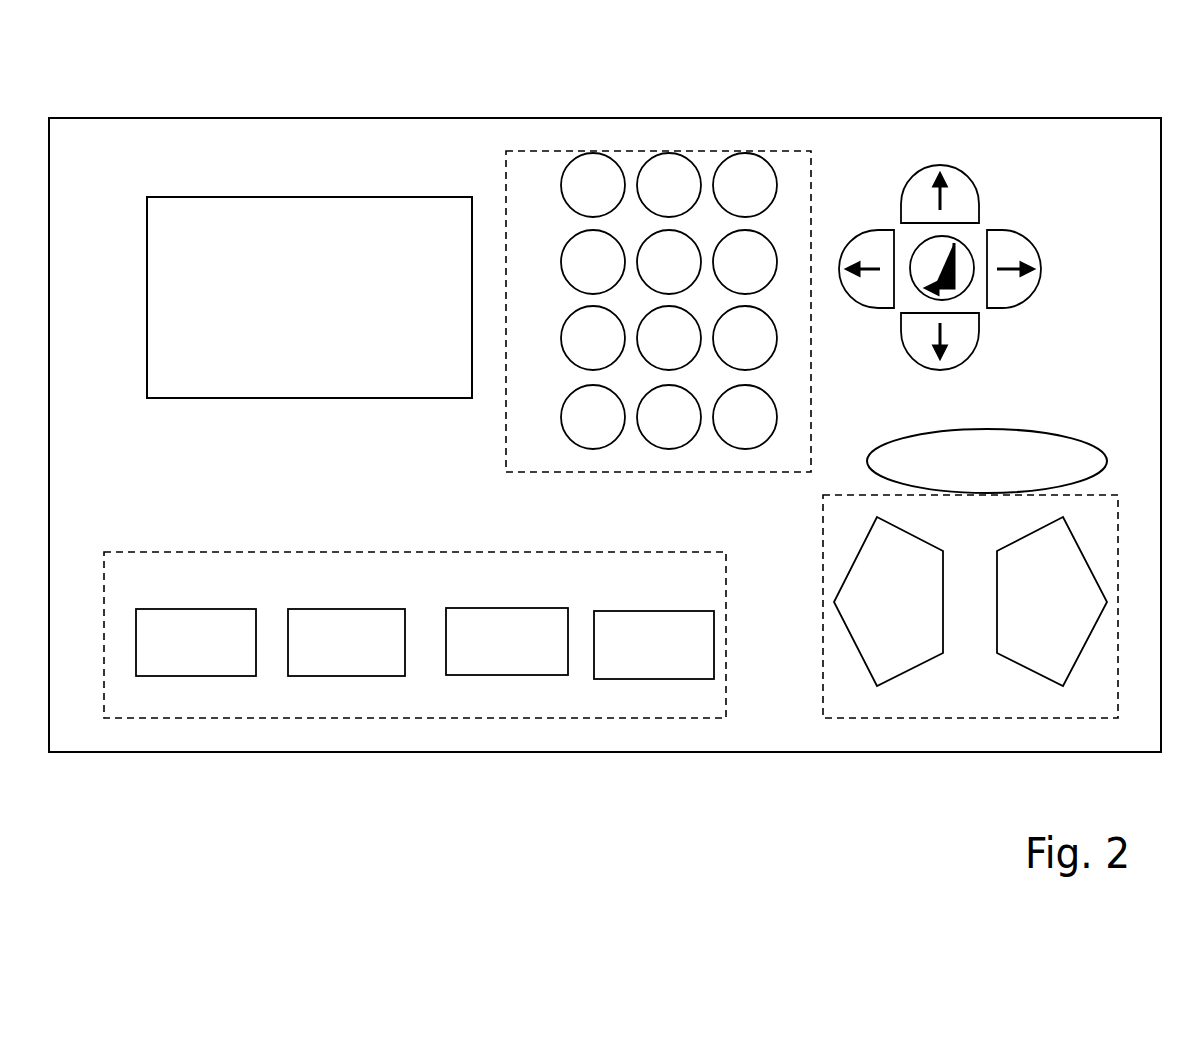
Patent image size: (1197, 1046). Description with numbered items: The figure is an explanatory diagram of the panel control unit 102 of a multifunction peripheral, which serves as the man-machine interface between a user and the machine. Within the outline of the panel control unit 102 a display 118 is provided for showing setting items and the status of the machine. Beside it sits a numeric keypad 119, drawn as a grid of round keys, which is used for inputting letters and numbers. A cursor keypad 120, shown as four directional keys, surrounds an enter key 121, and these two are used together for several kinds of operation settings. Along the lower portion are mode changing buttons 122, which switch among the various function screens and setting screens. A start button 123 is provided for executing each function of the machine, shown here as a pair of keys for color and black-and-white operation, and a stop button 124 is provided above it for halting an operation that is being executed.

The panel control unit 102 is at (1085, 117).
The display 118 is at (372, 207).
The numeric keypad 119 is at (714, 151).
The cursor keypad 120 is at (977, 187).
The enter key 121 is at (965, 240).
The mode changing buttons 122 is at (333, 552).
The start button 123 is at (1108, 495).
The stop button 124 is at (1040, 430).